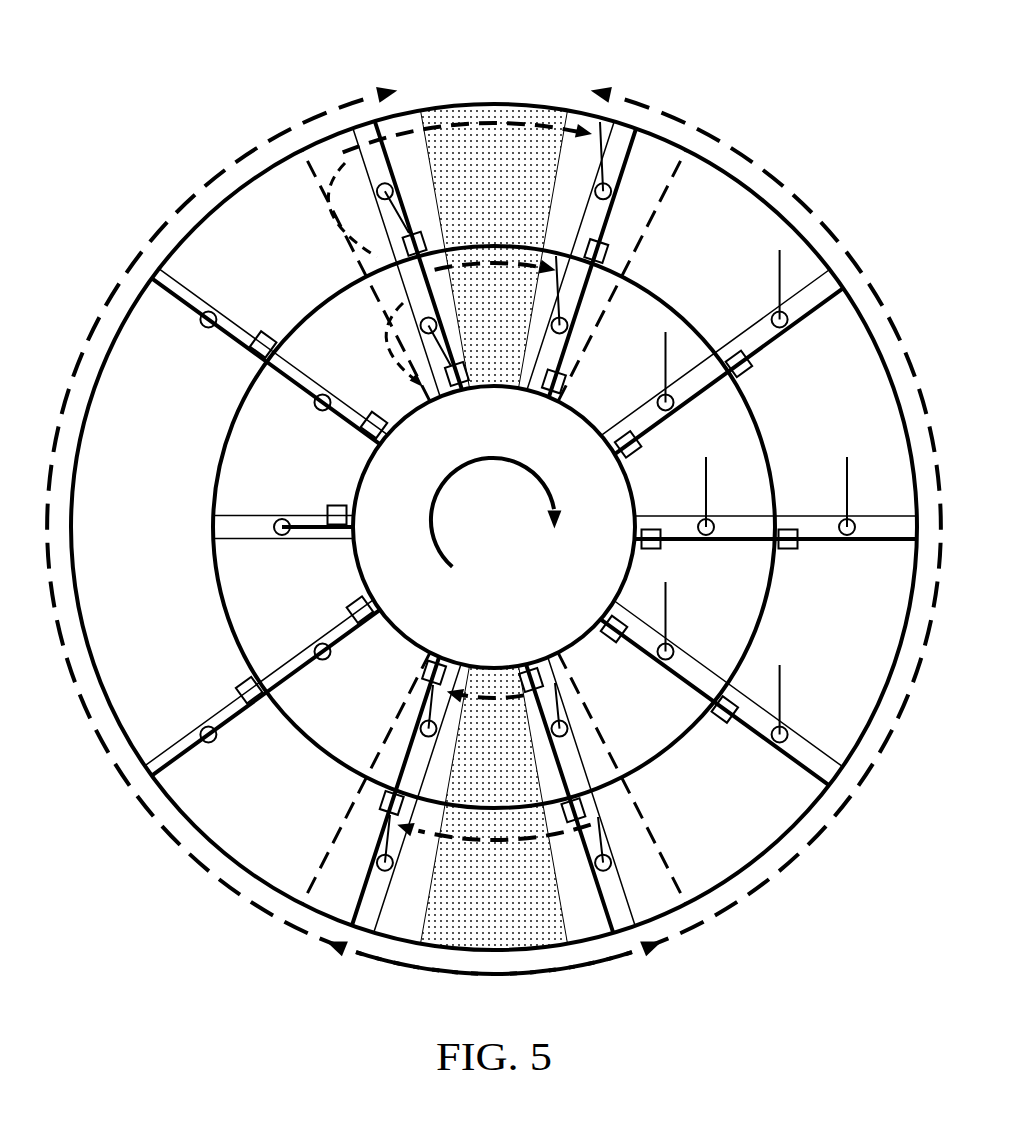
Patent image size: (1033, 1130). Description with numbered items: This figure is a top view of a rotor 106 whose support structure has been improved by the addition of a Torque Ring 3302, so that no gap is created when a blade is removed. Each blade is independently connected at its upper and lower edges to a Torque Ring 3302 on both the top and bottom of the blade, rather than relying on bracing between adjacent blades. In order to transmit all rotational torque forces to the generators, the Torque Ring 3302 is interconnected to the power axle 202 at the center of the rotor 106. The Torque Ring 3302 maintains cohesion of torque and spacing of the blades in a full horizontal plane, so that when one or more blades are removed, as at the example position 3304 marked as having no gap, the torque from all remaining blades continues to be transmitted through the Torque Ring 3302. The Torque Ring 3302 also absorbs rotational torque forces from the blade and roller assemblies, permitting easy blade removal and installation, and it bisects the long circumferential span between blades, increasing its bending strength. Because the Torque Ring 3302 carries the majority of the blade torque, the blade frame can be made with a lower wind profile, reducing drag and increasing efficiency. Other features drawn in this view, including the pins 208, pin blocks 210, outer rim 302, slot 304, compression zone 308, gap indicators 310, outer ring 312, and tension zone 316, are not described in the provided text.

The rotor 106 is at (496, 509).
The power axle 202 is at (753, 735).
The pin 208 is at (608, 198).
The pin block 210 is at (270, 337).
The outer rim 302 is at (110, 314).
The slot 304 is at (848, 455).
The compression zone 308 is at (500, 262).
The gap 310 is at (779, 284).
The outer ring 312 is at (877, 317).
The tension zone 316 is at (490, 688).
The Torque Ring 3302 is at (213, 575).
The example position 3304 is at (134, 490).